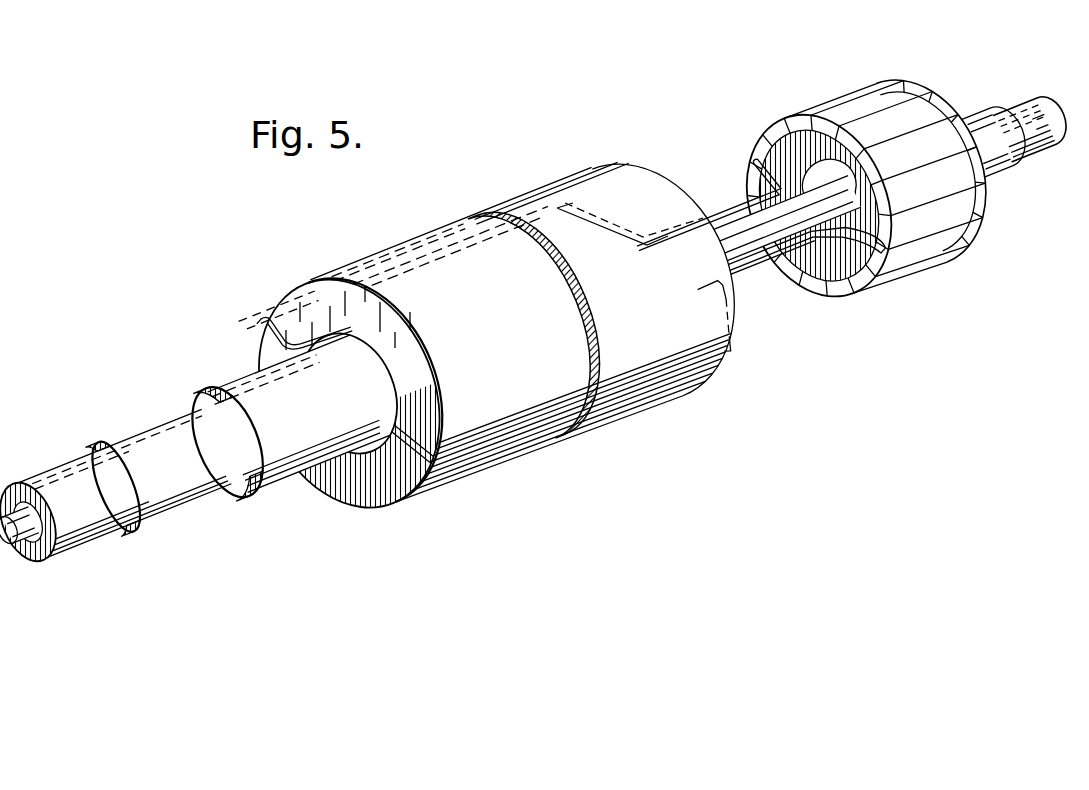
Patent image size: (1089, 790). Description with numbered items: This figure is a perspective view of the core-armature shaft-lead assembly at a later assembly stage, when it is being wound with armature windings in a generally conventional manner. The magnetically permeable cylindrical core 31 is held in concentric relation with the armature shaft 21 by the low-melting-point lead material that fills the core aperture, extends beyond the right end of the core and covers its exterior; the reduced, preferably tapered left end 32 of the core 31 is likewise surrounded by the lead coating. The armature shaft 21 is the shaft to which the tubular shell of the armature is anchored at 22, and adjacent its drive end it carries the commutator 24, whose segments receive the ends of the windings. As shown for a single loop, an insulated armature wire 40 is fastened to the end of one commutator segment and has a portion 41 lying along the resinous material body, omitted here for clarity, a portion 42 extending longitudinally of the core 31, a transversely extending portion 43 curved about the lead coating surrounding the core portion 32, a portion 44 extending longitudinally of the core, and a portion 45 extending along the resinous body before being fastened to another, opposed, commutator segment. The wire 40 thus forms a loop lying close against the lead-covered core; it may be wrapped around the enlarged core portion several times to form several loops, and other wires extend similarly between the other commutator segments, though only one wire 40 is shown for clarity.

The armature shaft 21 is at (1042, 169).
The anchoring point of shell to armature shaft 22 is at (751, 247).
The commutator 24 is at (841, 87).
The cylindrical core 31 is at (132, 422).
The left end of core 32 is at (169, 482).
The insulated armature wire 40 is at (731, 367).
The wire portion lying along resinous body 41 is at (767, 265).
The longitudinal wire portion 42 is at (510, 432).
The transversely extending wire portion 43 is at (398, 492).
The longitudinal wire portion 44 is at (383, 272).
The wire portion along resinous body to commutator 45 is at (722, 206).